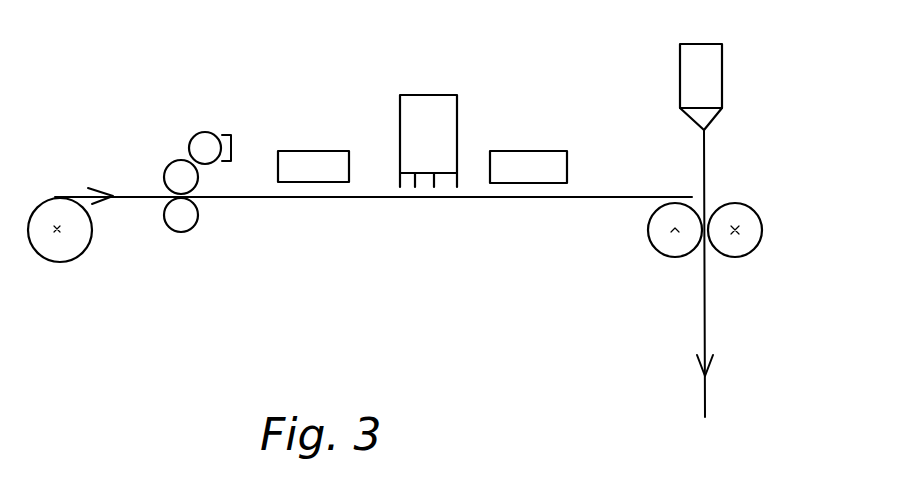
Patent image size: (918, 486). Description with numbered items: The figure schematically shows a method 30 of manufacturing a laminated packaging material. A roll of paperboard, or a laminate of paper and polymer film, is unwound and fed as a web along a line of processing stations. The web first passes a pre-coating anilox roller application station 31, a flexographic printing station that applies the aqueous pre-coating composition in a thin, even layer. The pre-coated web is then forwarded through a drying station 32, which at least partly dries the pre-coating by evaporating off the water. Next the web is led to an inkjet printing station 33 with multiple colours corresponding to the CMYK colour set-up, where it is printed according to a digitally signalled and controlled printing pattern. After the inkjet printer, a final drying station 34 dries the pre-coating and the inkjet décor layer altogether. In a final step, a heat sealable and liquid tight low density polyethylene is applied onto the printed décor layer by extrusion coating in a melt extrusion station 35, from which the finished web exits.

The method 30 is at (445, 223).
The pre-coating anilox roller application station 31 is at (194, 218).
The drying station 32 is at (313, 227).
The inkjet printing station 33 is at (427, 197).
The final drying station 34 is at (528, 224).
The melt extrusion station 35 is at (710, 230).